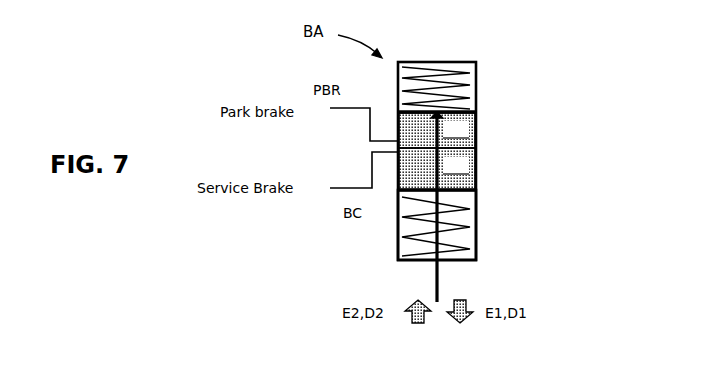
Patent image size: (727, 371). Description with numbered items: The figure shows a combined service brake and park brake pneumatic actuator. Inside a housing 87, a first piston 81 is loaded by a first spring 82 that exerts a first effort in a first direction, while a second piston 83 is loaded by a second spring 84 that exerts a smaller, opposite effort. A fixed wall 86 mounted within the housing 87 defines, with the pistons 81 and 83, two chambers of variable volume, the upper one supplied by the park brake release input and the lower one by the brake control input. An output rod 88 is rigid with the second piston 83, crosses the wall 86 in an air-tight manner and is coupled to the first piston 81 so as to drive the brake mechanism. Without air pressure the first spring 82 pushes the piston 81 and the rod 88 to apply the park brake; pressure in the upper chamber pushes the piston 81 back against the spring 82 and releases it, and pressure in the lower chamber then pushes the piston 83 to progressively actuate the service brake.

The first piston 81 is at (476, 100).
The first spring 82 is at (436, 72).
The second piston 83 is at (476, 184).
The second spring 84 is at (462, 212).
The fixed wall 86 is at (476, 138).
The housing 87 is at (398, 233).
The output rod 88 is at (440, 278).